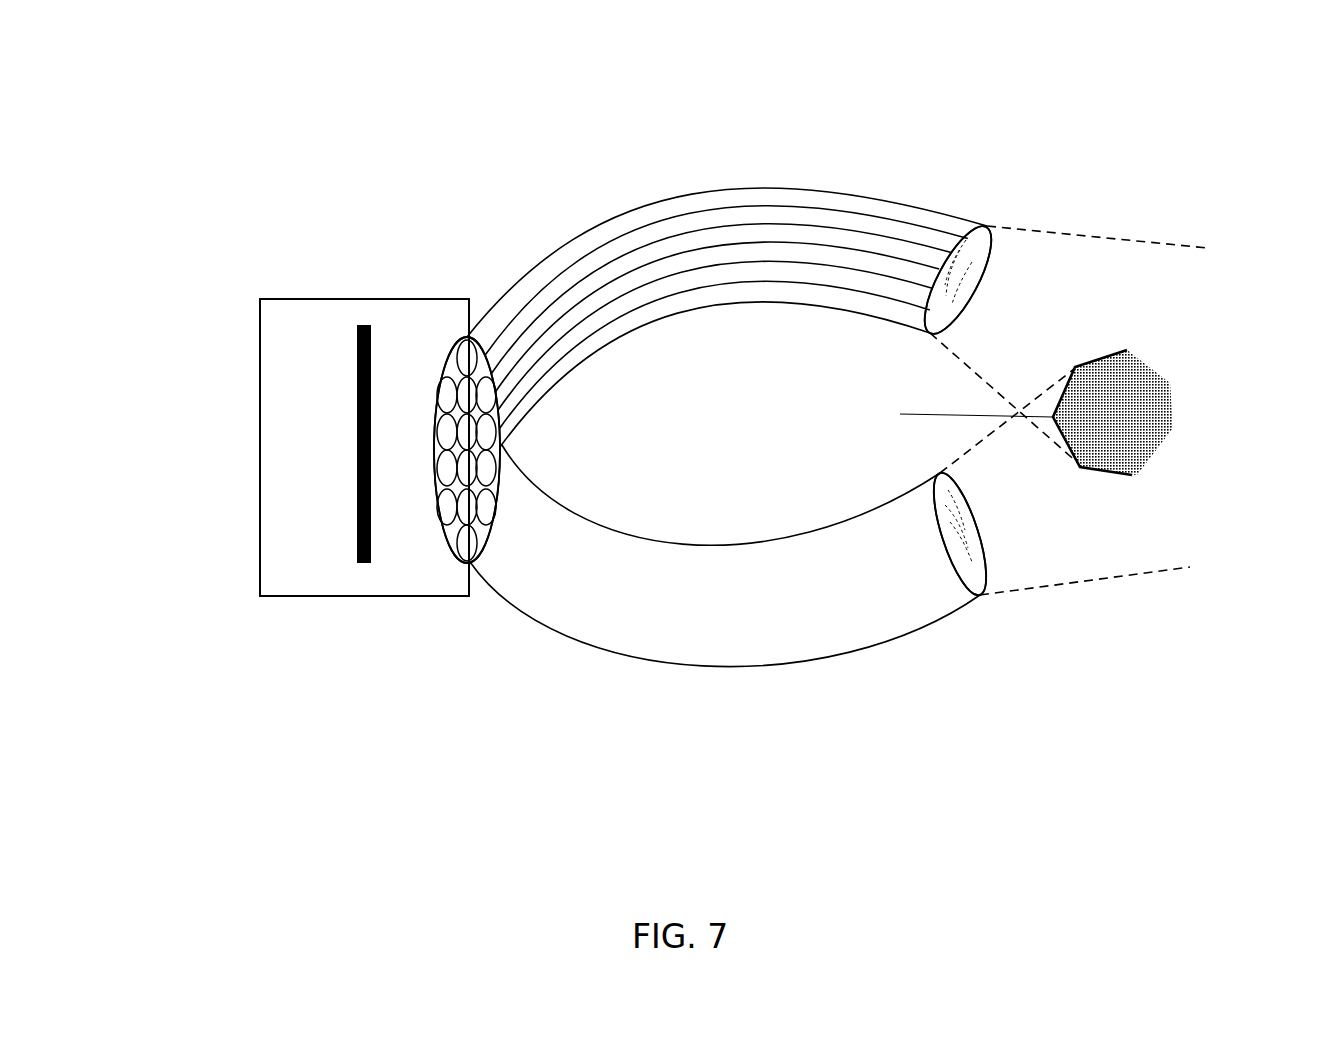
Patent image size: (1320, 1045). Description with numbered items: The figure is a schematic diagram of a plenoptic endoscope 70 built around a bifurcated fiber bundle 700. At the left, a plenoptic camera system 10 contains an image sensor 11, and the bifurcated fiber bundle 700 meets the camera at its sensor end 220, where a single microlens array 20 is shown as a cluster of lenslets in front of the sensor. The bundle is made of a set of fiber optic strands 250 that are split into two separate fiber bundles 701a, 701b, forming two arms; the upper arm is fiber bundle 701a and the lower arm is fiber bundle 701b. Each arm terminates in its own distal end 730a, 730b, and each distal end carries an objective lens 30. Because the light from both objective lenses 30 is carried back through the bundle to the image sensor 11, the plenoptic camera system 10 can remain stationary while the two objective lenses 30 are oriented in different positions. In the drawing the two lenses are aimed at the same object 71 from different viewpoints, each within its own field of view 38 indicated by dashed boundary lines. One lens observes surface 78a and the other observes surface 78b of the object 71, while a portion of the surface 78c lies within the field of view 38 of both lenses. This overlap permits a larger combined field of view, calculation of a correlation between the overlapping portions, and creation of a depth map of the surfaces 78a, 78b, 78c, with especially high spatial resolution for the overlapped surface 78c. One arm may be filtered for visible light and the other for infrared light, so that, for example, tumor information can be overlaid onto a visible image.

The plenoptic endoscope 70 is at (384, 128).
The plenoptic camera system 10 is at (340, 298).
The image sensor 11 is at (357, 523).
The microlens array 20 is at (485, 373).
The sensor end 220 is at (486, 606).
The bifurcated fiber bundle 700 is at (652, 162).
The first fiber bundle 701a is at (733, 184).
The second fiber bundle 701b is at (612, 527).
The fiber optic strands 250 is at (810, 229).
The first distal end 730a is at (957, 209).
The second distal end 730b is at (968, 613).
The objective lens 30 is at (990, 227).
The field of view 38 is at (1102, 235).
The first surface 78a is at (1100, 358).
The second surface 78b is at (1103, 476).
The overlapped surface portion 78c is at (954, 417).
The object 71 is at (1137, 397).